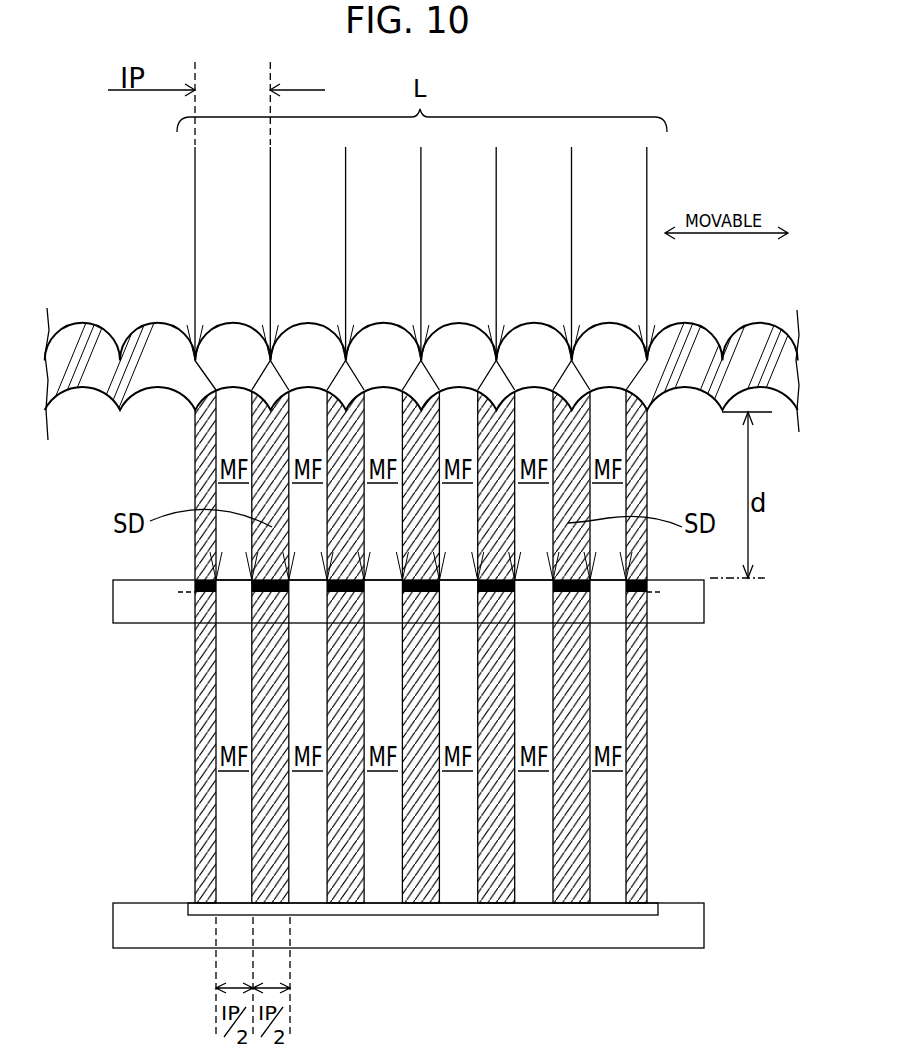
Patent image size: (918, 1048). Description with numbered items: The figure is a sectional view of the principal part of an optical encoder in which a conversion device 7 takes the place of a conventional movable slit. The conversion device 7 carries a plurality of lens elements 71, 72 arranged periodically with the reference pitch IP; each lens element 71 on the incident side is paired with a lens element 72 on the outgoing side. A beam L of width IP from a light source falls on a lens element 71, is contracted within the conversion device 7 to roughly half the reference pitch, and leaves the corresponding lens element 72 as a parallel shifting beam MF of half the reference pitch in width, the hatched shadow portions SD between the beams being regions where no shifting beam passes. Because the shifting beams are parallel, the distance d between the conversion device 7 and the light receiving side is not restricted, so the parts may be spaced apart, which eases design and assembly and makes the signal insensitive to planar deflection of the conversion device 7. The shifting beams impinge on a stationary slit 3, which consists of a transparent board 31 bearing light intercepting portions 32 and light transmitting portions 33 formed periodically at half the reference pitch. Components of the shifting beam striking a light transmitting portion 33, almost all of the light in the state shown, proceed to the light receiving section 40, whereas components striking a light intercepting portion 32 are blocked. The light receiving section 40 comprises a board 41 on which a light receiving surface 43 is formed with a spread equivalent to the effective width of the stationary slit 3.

The conversion device 7 is at (748, 308).
The lens element 71 is at (151, 310).
The lens element 72 is at (152, 390).
The stationary slit 3 is at (697, 614).
The transparent board 31 is at (125, 604).
The light intercepting portion 32 is at (267, 594).
The light transmitting portion 33 is at (308, 586).
The light receiving section 40 is at (663, 957).
The board 41 is at (697, 938).
The light receiving surface 43 is at (605, 906).